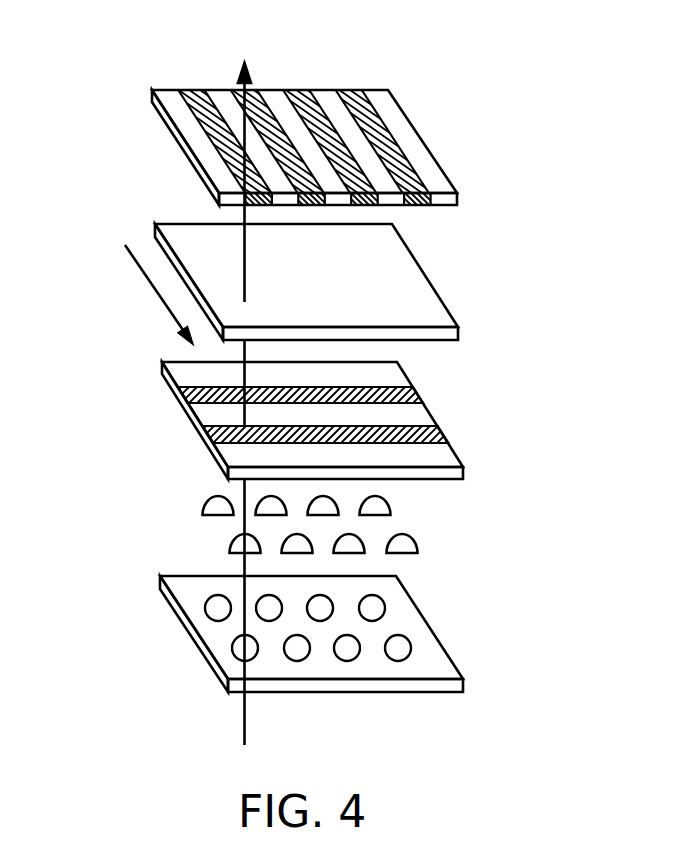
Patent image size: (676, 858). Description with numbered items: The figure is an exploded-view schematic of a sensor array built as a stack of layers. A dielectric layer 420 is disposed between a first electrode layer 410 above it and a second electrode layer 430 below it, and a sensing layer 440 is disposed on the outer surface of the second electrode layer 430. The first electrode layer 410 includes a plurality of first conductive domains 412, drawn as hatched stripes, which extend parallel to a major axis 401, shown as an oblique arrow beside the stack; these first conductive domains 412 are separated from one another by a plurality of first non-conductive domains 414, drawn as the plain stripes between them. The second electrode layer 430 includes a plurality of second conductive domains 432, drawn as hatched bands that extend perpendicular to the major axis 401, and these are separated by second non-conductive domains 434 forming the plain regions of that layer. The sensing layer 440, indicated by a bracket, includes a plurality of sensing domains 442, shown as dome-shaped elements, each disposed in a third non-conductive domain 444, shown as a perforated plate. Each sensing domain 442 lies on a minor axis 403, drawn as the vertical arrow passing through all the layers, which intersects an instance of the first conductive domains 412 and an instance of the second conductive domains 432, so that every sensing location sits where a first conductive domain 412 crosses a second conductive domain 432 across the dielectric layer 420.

The major axis 401 is at (150, 287).
The minor axis 403 is at (247, 90).
The first electrode layer 410 is at (308, 147).
The first conductive domains 412 is at (233, 153).
The first non-conductive domains 414 is at (193, 130).
The dielectric layer 420 is at (430, 277).
The second electrode layer 430 is at (302, 414).
The second conductive domains 432 is at (183, 400).
The second non-conductive domains 434 is at (178, 372).
The sensing layer 440 is at (110, 488).
The sensing domains 442 is at (413, 537).
The third non-conductive domain 444 is at (428, 618).